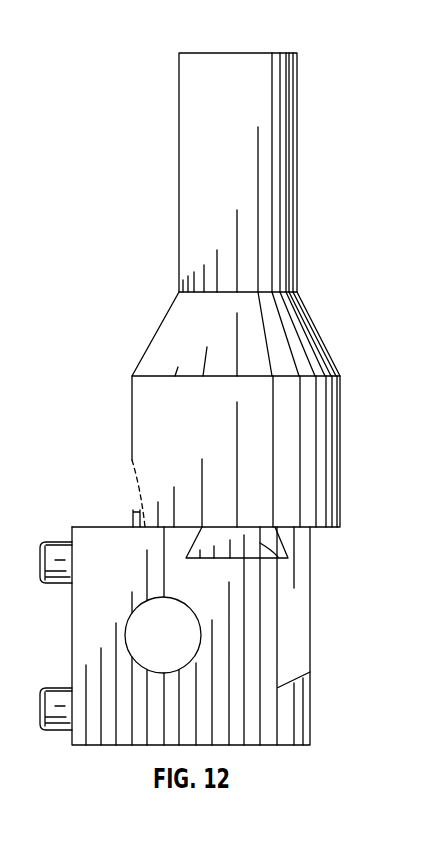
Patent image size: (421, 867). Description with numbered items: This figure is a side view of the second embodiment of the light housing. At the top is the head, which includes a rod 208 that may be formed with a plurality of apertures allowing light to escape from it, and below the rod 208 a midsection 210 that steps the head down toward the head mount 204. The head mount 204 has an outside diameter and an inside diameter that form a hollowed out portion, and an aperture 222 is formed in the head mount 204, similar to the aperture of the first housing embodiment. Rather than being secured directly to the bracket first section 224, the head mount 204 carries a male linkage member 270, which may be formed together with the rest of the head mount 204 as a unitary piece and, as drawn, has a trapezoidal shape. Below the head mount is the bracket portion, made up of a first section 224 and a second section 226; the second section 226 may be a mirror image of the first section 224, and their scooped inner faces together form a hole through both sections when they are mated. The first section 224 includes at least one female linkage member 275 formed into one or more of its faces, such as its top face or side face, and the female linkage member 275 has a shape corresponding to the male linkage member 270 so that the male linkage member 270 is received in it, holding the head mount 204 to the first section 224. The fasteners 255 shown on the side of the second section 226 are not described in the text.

The rod 208 is at (277, 144).
The midsection 210 is at (297, 330).
The head mount 204 is at (313, 419).
The aperture 222 is at (125, 499).
The fastener 255 is at (45, 540).
The second section 226 is at (87, 637).
The male linkage member 270 is at (246, 559).
The female linkage member 275 is at (248, 558).
The first section 224 is at (288, 727).